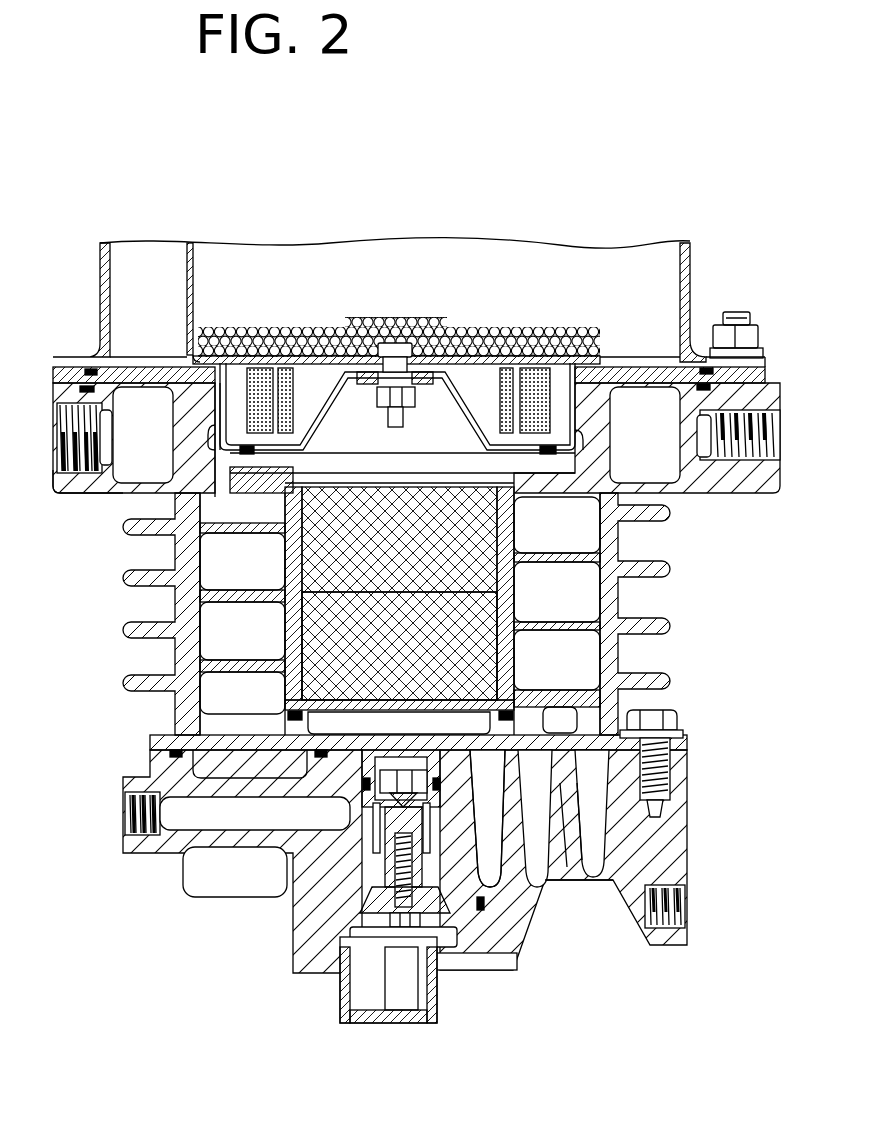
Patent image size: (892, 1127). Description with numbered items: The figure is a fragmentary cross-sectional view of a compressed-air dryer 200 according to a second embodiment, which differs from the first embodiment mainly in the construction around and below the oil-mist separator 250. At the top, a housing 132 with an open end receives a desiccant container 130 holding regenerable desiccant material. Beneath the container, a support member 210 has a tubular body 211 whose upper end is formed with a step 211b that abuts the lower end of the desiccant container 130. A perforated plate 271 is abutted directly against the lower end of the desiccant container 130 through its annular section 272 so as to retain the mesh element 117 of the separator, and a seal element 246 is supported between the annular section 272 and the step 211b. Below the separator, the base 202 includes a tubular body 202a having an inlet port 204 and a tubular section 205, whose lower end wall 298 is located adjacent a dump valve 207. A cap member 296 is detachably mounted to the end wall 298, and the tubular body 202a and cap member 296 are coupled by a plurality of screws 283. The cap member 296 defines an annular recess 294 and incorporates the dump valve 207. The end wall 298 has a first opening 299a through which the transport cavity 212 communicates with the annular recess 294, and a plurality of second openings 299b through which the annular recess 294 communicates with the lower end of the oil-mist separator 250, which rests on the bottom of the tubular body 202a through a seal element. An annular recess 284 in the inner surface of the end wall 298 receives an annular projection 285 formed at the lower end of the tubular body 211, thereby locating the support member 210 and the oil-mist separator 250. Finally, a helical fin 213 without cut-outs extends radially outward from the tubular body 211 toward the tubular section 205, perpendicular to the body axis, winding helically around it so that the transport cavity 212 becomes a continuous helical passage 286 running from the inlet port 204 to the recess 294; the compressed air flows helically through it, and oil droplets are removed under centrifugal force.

The compressed-air dryer 200 is at (398, 599).
The desiccant container 130 is at (188, 317).
The housing 132 is at (684, 284).
The inlet port 204 is at (58, 418).
The base 202 is at (699, 494).
The tubular body 202a is at (118, 497).
The seal element 246 is at (592, 453).
The oil-mist separator 250 is at (357, 473).
The annular section 272 is at (527, 457).
The perforated plate 271 is at (400, 487).
The step 211b is at (218, 468).
The tubular body 211 is at (290, 563).
The mesh element 117 is at (480, 538).
The helical passage 286 is at (576, 604).
The transport cavity 212 is at (575, 540).
The tubular section 205 is at (185, 591).
The support member 210 is at (283, 625).
The helical fin 213 is at (578, 631).
The annular projection 285 is at (275, 703).
The annular recess 284 is at (170, 730).
The first opening 299a is at (592, 722).
The screws 283 is at (680, 719).
The lower end wall 298 is at (513, 748).
The cap member 296 is at (150, 855).
The dump valve 207 is at (367, 865).
The annular recess 294 is at (600, 877).
The second openings 299b is at (480, 750).